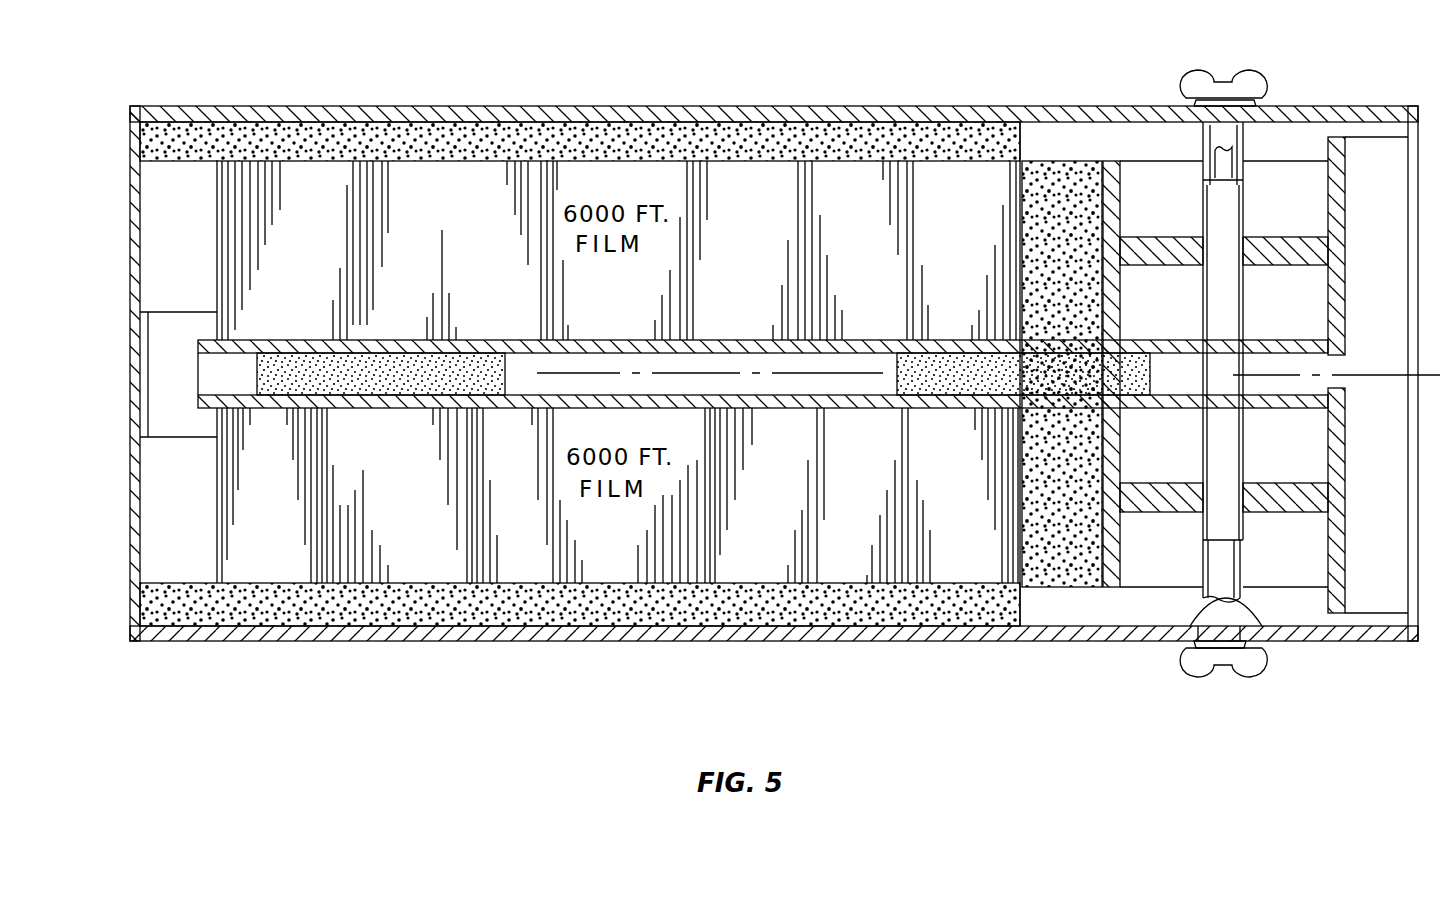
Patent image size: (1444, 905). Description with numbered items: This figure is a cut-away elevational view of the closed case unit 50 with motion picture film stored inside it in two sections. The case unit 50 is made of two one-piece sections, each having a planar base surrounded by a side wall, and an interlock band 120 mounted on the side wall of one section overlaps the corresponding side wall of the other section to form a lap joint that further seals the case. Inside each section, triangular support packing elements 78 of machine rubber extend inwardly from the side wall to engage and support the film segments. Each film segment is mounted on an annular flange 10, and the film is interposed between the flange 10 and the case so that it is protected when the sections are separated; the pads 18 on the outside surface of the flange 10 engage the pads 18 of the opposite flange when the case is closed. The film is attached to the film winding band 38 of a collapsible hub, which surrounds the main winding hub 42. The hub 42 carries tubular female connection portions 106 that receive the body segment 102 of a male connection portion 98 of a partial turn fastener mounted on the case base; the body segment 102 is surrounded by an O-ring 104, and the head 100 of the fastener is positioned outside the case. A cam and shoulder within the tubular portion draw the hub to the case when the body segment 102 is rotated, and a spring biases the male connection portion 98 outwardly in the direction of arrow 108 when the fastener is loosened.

The case unit 50 is at (174, 103).
The triangular support packing elements 78 is at (678, 612).
The interlock band 120 is at (132, 340).
The pads 18 is at (886, 372).
The flange 10 is at (511, 387).
The film winding band 38 is at (1028, 492).
The main winding hub 42 is at (1122, 185).
The female connection portions 106 is at (1210, 520).
The arrow 108 is at (1270, 545).
The body segment 102 is at (1200, 592).
The O-ring 104 is at (1262, 617).
The male connection portion 98 is at (1183, 672).
The head 100 is at (1250, 663).